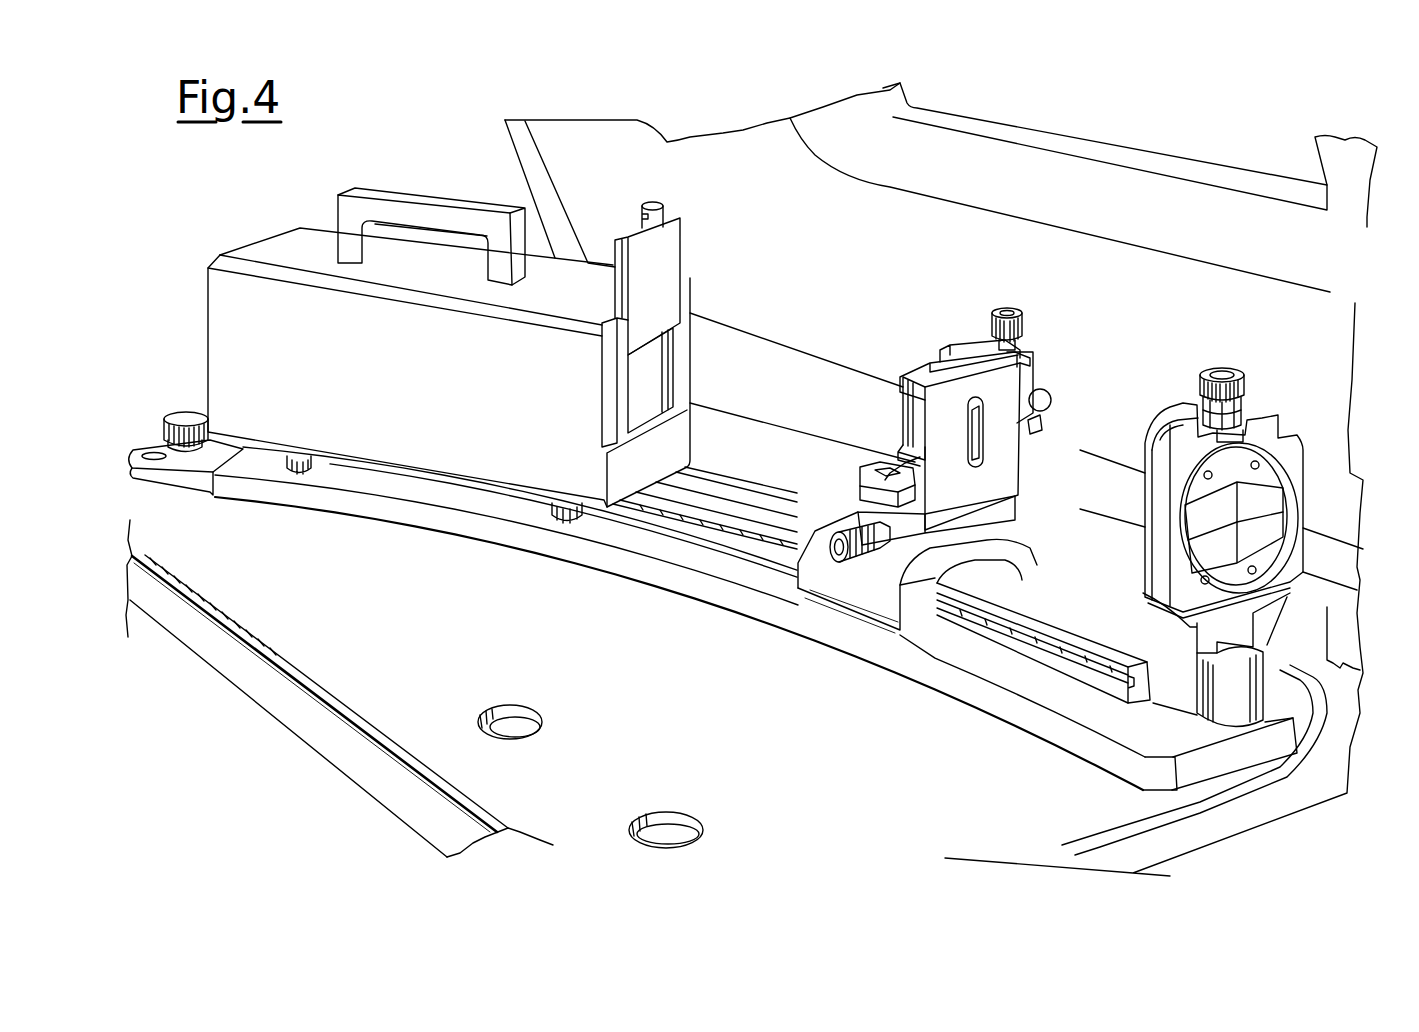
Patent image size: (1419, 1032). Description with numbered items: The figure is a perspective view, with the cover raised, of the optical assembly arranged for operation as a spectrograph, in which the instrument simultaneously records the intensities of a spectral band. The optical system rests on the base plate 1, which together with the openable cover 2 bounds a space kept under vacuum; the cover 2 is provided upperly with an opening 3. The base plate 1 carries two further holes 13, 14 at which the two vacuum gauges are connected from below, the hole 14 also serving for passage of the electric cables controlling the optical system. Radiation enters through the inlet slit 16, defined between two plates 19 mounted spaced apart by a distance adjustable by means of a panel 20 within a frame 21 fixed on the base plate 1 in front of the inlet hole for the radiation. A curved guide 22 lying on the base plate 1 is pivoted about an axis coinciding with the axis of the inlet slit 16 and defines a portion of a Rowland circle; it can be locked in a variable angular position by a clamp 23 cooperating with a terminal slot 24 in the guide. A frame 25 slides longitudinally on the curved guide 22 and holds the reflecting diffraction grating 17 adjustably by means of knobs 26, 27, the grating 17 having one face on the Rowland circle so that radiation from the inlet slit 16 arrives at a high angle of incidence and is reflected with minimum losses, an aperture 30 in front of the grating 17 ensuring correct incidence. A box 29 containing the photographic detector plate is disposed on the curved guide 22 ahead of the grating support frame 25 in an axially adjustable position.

The base plate 1 is at (347, 680).
The openable cover 2 is at (500, 136).
The opening 3 is at (958, 123).
The hole 13 is at (660, 847).
The hole 14 is at (502, 734).
The inlet slit 16 is at (1272, 533).
The reflecting diffraction grating 17 is at (920, 413).
The plates 19 is at (1270, 512).
The panel 20 is at (1245, 385).
The frame 21 is at (1160, 502).
The curved guide 22 is at (683, 600).
The clamp 23 is at (183, 417).
The terminal slot 24 is at (153, 453).
The frame 25 is at (1028, 457).
The knob 26 is at (853, 548).
The knob 27 is at (1013, 325).
The box 29 is at (298, 247).
The aperture 30 is at (975, 418).